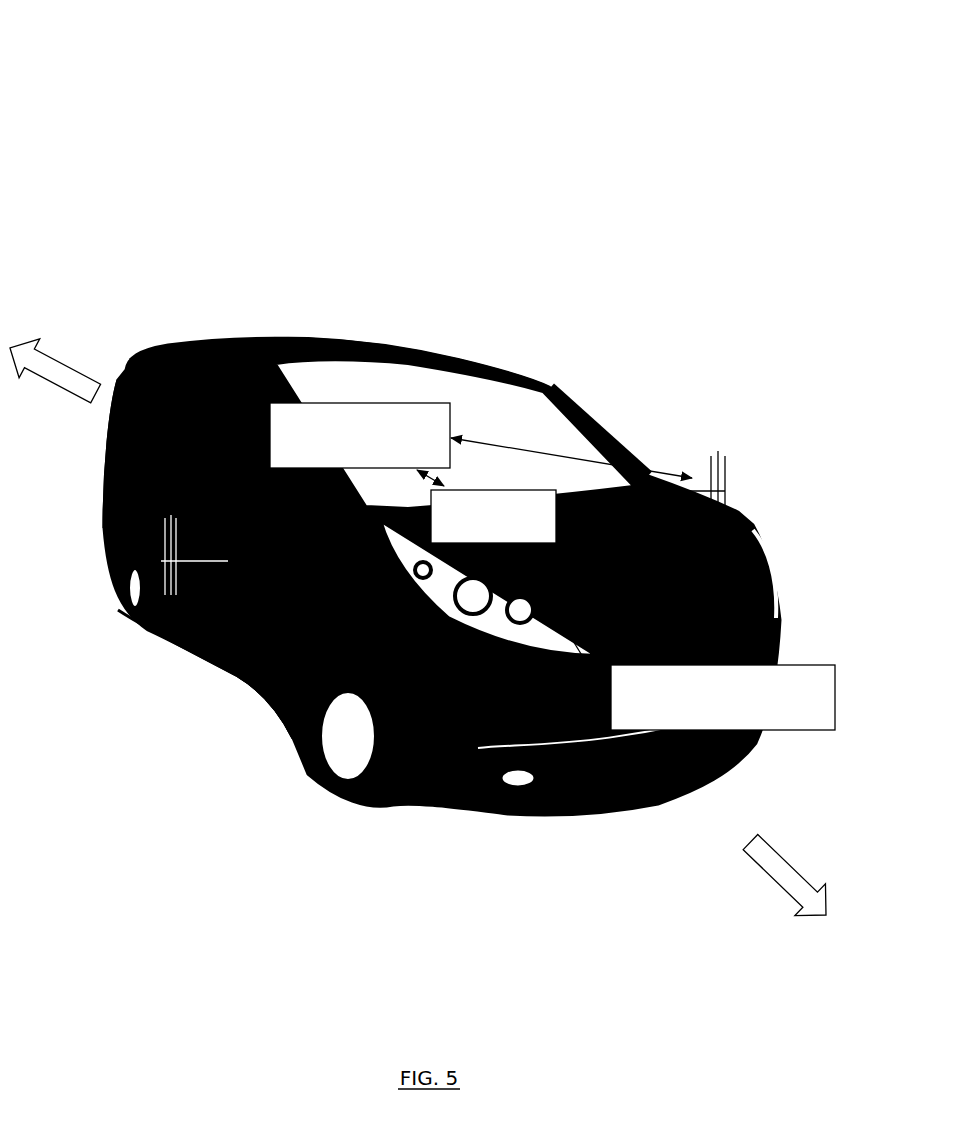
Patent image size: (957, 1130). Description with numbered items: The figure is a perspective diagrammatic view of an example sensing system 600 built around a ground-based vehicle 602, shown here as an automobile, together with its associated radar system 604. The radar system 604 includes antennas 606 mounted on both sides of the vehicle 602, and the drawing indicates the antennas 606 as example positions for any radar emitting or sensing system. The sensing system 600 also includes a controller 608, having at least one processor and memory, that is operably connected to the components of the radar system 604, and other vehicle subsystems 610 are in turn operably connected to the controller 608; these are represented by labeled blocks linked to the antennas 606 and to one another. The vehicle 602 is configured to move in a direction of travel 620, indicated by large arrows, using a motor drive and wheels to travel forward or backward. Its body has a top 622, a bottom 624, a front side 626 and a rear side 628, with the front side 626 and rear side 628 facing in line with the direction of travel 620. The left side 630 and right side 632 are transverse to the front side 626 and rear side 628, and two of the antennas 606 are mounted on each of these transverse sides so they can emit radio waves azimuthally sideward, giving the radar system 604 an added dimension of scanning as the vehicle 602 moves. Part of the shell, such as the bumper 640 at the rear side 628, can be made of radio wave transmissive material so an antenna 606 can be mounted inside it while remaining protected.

The sensing system 600 is at (114, 46).
The ground-based vehicle 602 is at (310, 300).
The radar system 604 is at (332, 452).
The antenna 606 is at (717, 465).
The controller 608 is at (467, 531).
The vehicle subsystems 610 is at (697, 711).
The direction of travel 620 is at (66, 357).
The top 622 is at (448, 339).
The bottom 624 is at (260, 720).
The front side 626 is at (560, 773).
The rear side 628 is at (95, 472).
The left side 630 is at (619, 449).
The right side 632 is at (197, 645).
The bumper 640 is at (93, 567).